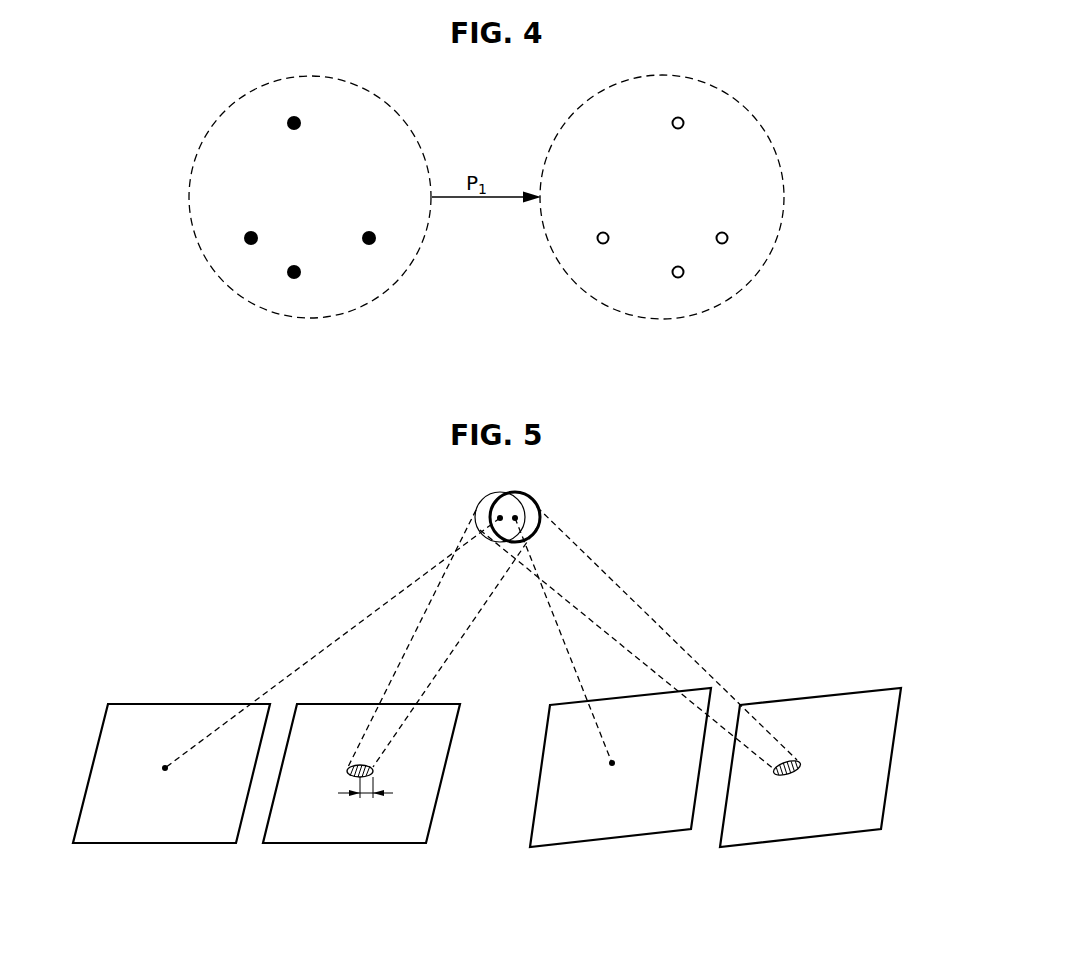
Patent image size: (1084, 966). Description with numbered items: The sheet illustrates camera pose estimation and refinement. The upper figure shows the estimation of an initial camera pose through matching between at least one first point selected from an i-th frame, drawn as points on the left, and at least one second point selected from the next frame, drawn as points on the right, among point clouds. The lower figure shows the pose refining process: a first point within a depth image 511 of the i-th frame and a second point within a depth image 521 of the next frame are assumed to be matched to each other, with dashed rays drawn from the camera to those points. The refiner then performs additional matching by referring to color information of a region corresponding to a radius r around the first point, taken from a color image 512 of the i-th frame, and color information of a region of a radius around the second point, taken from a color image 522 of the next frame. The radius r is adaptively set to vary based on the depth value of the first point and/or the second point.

The depth image 511 is at (155, 844).
The color image 512 is at (343, 844).
The depth image 521 is at (608, 840).
The color image 522 is at (798, 840).